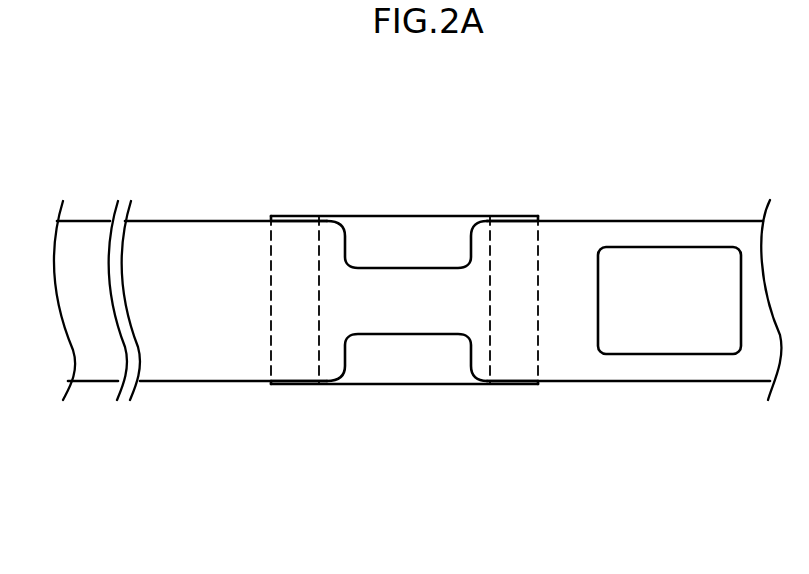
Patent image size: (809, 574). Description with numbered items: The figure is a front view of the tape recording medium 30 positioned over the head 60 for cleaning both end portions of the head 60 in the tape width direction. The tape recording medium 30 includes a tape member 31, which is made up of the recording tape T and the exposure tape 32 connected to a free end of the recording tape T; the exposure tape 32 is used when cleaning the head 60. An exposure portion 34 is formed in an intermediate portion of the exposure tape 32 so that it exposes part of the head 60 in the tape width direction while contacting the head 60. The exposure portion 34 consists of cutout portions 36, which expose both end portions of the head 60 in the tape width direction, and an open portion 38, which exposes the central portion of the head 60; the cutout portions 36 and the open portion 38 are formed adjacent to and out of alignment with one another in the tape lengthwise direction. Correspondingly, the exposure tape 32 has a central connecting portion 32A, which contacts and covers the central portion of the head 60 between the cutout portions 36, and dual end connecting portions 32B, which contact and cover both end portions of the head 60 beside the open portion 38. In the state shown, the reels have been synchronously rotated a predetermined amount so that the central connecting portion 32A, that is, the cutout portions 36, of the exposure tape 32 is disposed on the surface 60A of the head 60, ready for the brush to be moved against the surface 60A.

The tape recording medium 30 is at (195, 112).
The tape member 31 is at (247, 218).
The exposure tape 32 is at (185, 242).
The central connecting portion 32A is at (398, 313).
The dual end connecting portions 32B is at (620, 233).
The exposure portion 34 is at (526, 307).
The cutout portions 36 is at (383, 267).
The open portion 38 is at (648, 248).
The head 60 is at (413, 214).
The surface of the head 60A is at (442, 238).
The recording tape T is at (95, 360).